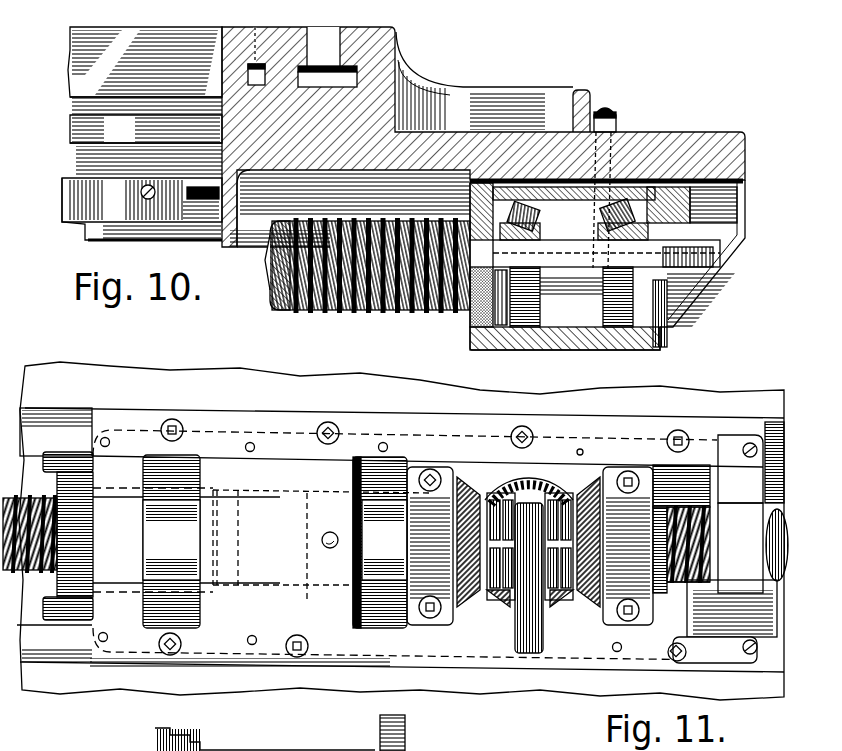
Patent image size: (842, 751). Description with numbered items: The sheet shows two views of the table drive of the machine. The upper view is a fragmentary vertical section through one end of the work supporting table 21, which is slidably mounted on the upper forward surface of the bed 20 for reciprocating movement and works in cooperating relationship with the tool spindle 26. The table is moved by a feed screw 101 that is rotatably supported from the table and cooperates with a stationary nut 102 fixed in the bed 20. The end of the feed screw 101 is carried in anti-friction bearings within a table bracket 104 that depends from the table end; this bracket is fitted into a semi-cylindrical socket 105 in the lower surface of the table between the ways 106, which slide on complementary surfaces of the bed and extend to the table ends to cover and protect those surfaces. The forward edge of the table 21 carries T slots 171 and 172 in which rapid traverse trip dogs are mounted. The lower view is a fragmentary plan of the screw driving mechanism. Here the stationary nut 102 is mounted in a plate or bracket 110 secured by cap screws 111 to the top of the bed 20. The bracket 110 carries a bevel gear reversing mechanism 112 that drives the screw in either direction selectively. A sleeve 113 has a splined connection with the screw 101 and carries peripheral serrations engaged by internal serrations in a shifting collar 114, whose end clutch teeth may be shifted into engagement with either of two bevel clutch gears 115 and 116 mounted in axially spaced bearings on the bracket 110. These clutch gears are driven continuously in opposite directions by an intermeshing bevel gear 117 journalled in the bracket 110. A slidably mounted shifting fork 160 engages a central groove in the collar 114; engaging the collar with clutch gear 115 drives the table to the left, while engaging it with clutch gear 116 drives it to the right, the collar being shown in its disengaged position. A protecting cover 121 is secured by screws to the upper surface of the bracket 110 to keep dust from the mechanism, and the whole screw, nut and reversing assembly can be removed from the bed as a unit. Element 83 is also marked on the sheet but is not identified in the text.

In FIG. 11, the bed 20 is at (112, 368).
In FIG. 10, the work supporting table 21 is at (388, 60).
In FIG. 11, the tool spindle 26 is at (238, 750).
In FIG. 11, the bracket 83 is at (405, 738).
In FIG. 10, the feed screw 101 is at (401, 310).
In FIG. 11, the feed screw 101 is at (700, 534).
In FIG. 11, the stationary nut 102 is at (250, 480).
In FIG. 10, the table bracket 104 is at (578, 351).
In FIG. 10, the semi-cylindrical socket 105 is at (742, 192).
In FIG. 10, the way 106 is at (208, 234).
In FIG. 11, the bracket 110 is at (105, 418).
In FIG. 11, the cap screw 111 is at (166, 419).
In FIG. 11, the bevel gear reversing mechanism 112 is at (493, 440).
In FIG. 11, the sleeve 113 is at (404, 457).
In FIG. 11, the shifting collar 114 is at (543, 500).
In FIG. 11, the bevel clutch gear 115 is at (474, 478).
In FIG. 11, the bevel clutch gear 116 is at (594, 478).
In FIG. 11, the bevel gear 117 is at (541, 474).
In FIG. 11, the protecting cover 121 is at (728, 648).
In FIG. 11, the shifting fork 160 is at (523, 655).
In FIG. 10, the T slot 171 is at (145, 62).
In FIG. 10, the T slot 172 is at (146, 129).